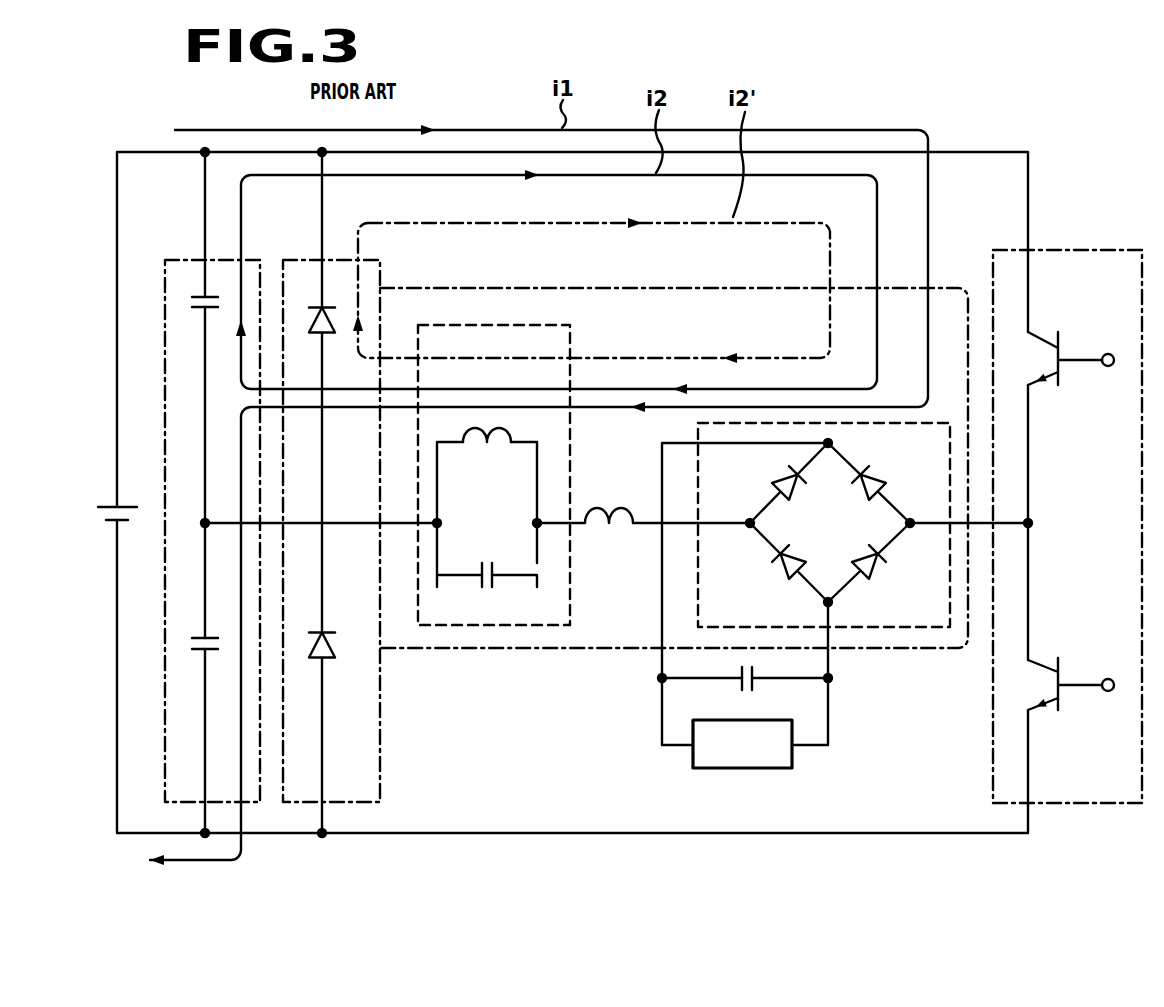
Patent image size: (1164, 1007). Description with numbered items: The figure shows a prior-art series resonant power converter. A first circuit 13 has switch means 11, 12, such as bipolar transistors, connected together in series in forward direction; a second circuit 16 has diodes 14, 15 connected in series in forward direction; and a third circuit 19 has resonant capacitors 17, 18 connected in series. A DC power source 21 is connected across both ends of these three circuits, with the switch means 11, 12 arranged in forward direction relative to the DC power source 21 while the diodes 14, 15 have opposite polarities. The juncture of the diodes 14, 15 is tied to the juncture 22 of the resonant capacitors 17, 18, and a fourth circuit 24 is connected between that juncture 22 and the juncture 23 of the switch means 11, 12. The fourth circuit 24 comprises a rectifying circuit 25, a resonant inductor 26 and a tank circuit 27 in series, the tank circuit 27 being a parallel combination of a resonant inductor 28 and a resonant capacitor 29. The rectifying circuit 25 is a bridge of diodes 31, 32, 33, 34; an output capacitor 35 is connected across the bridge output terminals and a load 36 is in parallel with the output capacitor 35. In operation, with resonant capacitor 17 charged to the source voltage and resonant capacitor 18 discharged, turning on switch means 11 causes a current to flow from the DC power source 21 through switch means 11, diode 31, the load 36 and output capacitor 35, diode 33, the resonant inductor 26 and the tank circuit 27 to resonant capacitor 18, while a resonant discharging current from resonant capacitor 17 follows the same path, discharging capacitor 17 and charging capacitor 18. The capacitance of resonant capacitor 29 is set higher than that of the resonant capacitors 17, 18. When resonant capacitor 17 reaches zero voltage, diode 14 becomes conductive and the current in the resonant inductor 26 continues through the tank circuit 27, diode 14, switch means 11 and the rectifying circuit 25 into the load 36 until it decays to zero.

The switch means 11 is at (1059, 335).
The switch means 12 is at (1062, 672).
The first circuit 13 is at (1127, 250).
The diode 14 is at (314, 317).
The diode 15 is at (331, 648).
The second circuit 16 is at (303, 258).
The resonant capacitor 17 is at (198, 313).
The resonant capacitor 18 is at (198, 654).
The third circuit 19 is at (180, 258).
The DC power source 21 is at (114, 524).
The juncture of the resonant capacitors 22 is at (203, 526).
The juncture of the switch means 23 is at (1030, 520).
The fourth circuit 24 is at (660, 288).
The rectifying circuit 25 is at (928, 410).
The resonant inductor 26 is at (612, 504).
The tank circuit 27 is at (574, 340).
The resonant inductor 28 is at (478, 448).
The resonant capacitor 29 is at (497, 562).
The diode 31 is at (877, 474).
The diode 32 is at (776, 475).
The diode 33 is at (777, 572).
The diode 34 is at (881, 572).
The output capacitor 35 is at (748, 690).
The load 36 is at (754, 770).